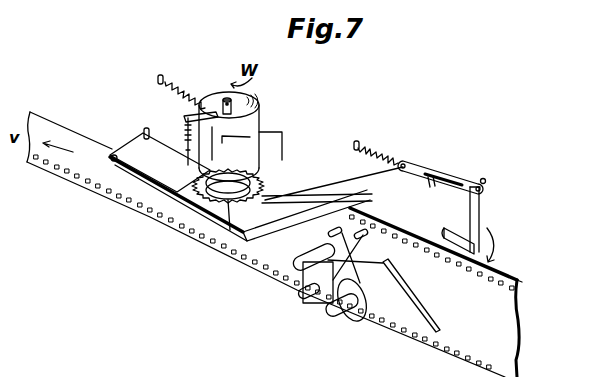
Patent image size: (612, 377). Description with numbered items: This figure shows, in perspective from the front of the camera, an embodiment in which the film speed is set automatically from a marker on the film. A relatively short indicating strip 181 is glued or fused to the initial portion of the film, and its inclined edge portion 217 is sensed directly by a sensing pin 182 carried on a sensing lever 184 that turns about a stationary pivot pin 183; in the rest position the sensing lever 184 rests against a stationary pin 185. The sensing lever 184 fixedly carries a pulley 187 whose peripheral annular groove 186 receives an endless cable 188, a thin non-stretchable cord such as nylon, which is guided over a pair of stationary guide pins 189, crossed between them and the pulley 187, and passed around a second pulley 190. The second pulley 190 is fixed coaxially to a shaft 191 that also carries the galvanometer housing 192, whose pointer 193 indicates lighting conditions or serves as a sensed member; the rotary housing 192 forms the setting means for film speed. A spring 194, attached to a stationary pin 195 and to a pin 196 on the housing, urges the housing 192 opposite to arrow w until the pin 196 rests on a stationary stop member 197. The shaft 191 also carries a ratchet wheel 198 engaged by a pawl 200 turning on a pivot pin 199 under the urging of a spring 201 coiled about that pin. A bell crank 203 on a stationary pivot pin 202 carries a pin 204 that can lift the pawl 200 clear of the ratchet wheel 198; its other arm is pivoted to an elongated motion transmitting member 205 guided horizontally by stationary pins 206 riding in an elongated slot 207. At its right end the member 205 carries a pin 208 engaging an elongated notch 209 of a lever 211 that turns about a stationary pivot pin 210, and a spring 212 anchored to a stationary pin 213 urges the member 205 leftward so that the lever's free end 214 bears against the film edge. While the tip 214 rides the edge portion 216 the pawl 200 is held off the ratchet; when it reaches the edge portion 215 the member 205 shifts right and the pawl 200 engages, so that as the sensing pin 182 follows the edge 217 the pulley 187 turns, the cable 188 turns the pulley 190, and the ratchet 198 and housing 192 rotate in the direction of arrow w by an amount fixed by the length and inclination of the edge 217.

The indicating strip 181 is at (402, 310).
The sensing pin 182 is at (297, 258).
The stationary pivot pin 183 is at (328, 318).
The sensing lever 184 is at (303, 281).
The stationary pin 185 is at (313, 299).
The annular groove 186 is at (413, 293).
The pulley 187 is at (355, 313).
The endless cable 188 is at (283, 194).
The stationary guide pins 189 is at (328, 233).
The second pulley 190 is at (276, 167).
The shaft 191 is at (233, 203).
The galvanometer housing 192 is at (252, 101).
The pointer 193 is at (272, 133).
The spring 194 is at (186, 86).
The stationary pin 195 is at (158, 77).
The pin 196 is at (224, 99).
The stationary stop member 197 is at (184, 117).
The ratchet wheel 198 is at (207, 182).
The pivot pin 199 is at (187, 129).
The pawl 200 is at (182, 178).
The spring 201 is at (165, 197).
The stationary pivot pin 202 is at (143, 129).
The bell crank 203 is at (128, 147).
The pin 204 is at (232, 153).
The motion transmitting member 205 is at (240, 238).
The stationary pins 206 is at (437, 178).
The elongated slot 207 is at (458, 178).
The pin 208 is at (482, 190).
The elongated notch 209 is at (486, 181).
The stationary pivot pin 210 is at (494, 252).
The lever 211 is at (479, 222).
The spring 212 is at (383, 152).
The stationary pin 213 is at (358, 142).
The free end 214 is at (443, 236).
The edge portion 215 is at (517, 280).
The edge portion 216 is at (41, 112).
The edge portion 217 is at (385, 267).